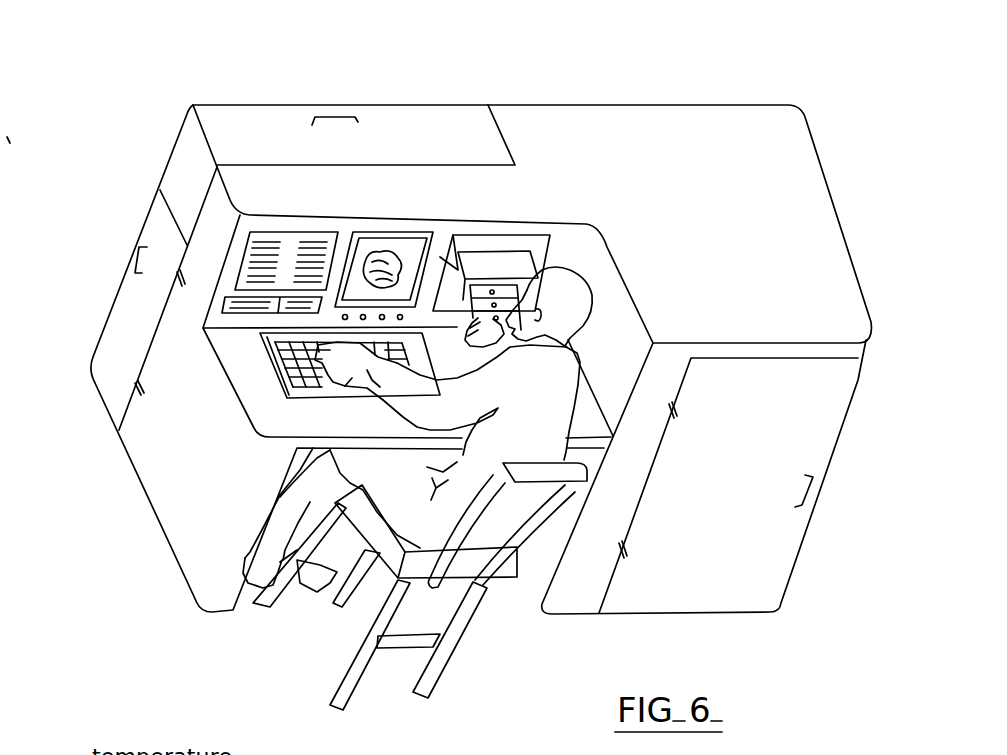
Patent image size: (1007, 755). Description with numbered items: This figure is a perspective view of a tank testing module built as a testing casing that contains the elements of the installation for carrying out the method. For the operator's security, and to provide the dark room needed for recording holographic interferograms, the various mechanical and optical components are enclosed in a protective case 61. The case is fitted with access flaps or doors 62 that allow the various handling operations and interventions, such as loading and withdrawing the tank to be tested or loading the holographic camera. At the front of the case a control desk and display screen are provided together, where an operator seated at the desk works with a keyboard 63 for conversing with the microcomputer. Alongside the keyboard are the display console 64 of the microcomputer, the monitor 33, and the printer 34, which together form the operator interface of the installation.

The protective case 61 is at (626, 102).
The access flaps or doors 62 is at (160, 243).
The keyboard 63 is at (255, 347).
The display console 64 is at (288, 233).
The monitor 33 is at (397, 232).
The printer 34 is at (503, 260).